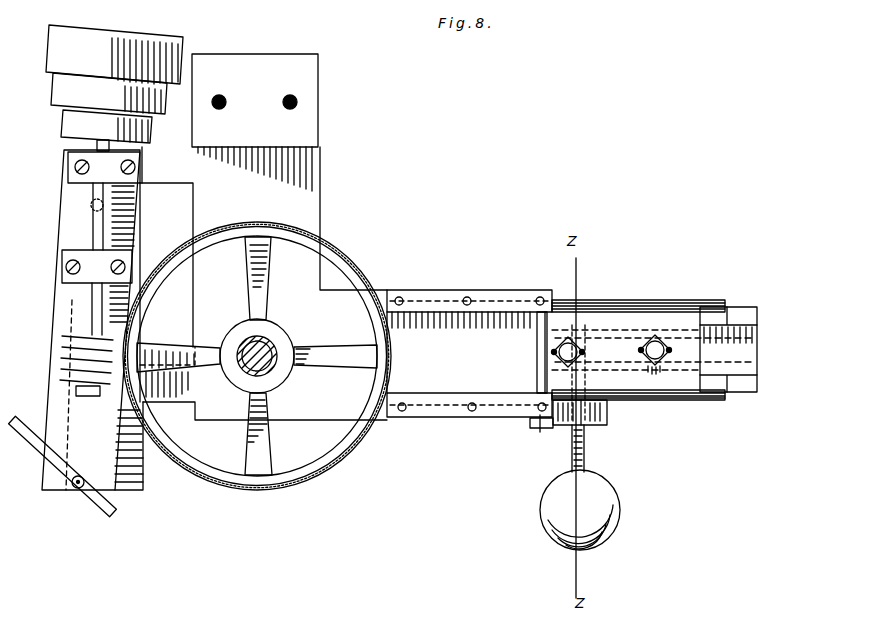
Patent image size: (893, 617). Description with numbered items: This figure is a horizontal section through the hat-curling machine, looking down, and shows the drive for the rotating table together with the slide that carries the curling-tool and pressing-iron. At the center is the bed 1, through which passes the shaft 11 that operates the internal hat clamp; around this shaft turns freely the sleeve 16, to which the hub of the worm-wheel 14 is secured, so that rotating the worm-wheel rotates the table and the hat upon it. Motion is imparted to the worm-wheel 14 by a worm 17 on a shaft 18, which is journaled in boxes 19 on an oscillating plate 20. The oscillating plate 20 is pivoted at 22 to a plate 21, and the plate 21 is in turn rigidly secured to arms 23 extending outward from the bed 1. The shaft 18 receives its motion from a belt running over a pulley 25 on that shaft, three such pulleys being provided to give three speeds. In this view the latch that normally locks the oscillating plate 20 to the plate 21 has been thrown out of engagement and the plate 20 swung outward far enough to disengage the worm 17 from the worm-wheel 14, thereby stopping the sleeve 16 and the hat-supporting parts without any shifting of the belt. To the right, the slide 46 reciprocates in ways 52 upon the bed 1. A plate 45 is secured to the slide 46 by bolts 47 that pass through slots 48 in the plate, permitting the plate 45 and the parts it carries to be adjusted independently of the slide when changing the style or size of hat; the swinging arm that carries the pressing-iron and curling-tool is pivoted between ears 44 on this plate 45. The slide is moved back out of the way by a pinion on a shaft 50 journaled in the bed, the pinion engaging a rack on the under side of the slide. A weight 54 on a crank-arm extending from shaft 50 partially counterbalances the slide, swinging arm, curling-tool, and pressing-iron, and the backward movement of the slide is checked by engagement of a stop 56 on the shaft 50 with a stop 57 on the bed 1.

The bed 1 is at (312, 211).
The shaft 11 is at (277, 368).
The worm-wheel 14 is at (385, 312).
The sleeve 16 is at (270, 340).
The worm 17 is at (70, 342).
The shaft 18 is at (100, 237).
The boxes 19 is at (68, 169).
The oscillating plate 20 is at (55, 403).
The plate 21 is at (138, 485).
The pivot 22 is at (92, 207).
The arms 23 is at (178, 415).
The pulley 25 is at (114, 88).
The ears 44 is at (740, 380).
The plate 45 is at (638, 315).
The slide 46 is at (537, 360).
The bolts 47 is at (588, 356).
The slots 48 is at (672, 352).
The shaft 50 is at (585, 465).
The ways 52 is at (447, 290).
The weight 54 is at (580, 510).
The stop 56 is at (540, 422).
The stop 57 is at (538, 430).